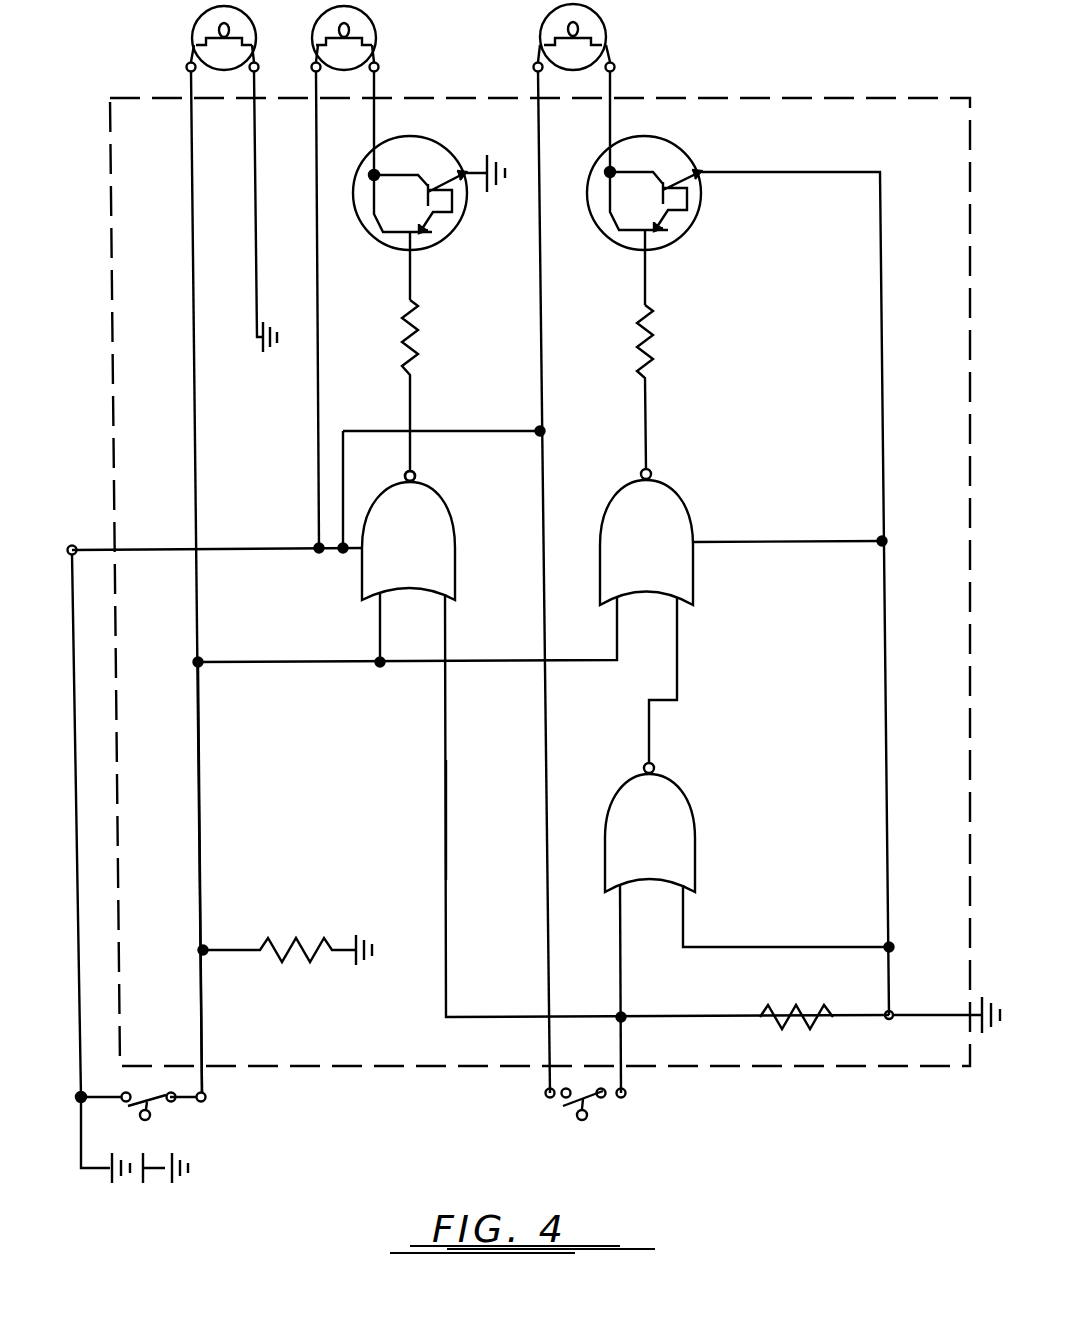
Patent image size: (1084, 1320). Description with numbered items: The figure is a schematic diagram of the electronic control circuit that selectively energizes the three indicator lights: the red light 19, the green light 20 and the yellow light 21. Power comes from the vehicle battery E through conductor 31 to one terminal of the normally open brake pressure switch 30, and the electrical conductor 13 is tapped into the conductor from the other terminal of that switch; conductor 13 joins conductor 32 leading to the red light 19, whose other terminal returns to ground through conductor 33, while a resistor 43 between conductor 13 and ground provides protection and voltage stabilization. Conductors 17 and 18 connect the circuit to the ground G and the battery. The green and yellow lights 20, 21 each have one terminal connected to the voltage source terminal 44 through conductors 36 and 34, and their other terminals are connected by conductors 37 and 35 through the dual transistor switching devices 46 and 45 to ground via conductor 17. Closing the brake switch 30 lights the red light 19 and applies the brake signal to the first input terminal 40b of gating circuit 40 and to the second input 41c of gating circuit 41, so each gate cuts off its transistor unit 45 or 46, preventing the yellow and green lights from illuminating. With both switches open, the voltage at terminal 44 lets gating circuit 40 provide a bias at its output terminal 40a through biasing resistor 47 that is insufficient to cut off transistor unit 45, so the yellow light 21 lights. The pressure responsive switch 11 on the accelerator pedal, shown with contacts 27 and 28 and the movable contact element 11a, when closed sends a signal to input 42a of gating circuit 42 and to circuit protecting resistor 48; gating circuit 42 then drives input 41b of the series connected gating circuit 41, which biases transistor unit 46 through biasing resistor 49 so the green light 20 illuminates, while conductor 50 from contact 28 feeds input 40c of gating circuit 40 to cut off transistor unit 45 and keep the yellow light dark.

The red light 19 is at (188, 20).
The yellow light 21 is at (371, 19).
The green light 20 is at (598, 14).
The conductor 32 is at (193, 132).
The conductor 33 is at (248, 211).
The conductor 34 is at (315, 172).
The conductor 35 is at (391, 125).
The conductor 36 is at (538, 168).
The conductor 37 is at (628, 124).
The dual transistor switching device 45 is at (460, 227).
The dual transistor switching device 46 is at (697, 223).
The biasing resistor 47 is at (448, 347).
The biasing resistor 49 is at (666, 357).
The circuit protecting resistor 48 is at (824, 1010).
The resistor 43 is at (315, 943).
The gating circuit 40 is at (425, 517).
The output terminal 40a is at (430, 462).
The first input terminal 40b is at (375, 600).
The input 40c is at (458, 596).
The gating circuit 41 is at (658, 520).
The input 41b is at (692, 594).
The second input 41c is at (619, 597).
The gating circuit 42 is at (662, 826).
The input 42a is at (630, 892).
The voltage source terminal 44 is at (74, 544).
The conductor 18 is at (88, 764).
The electrical conductor 13 is at (200, 1001).
The conductor 50 is at (440, 814).
The conductor 17 is at (942, 1003).
The ground connection G is at (999, 1003).
The battery E is at (135, 1185).
The electrical conductor 31 is at (112, 1105).
The brake pressure switch 30 is at (158, 1120).
The contact 27 is at (544, 1094).
The contact 28 is at (614, 1094).
The pressure responsive switch 11 is at (560, 1112).
The movable contact element 11a is at (592, 1108).